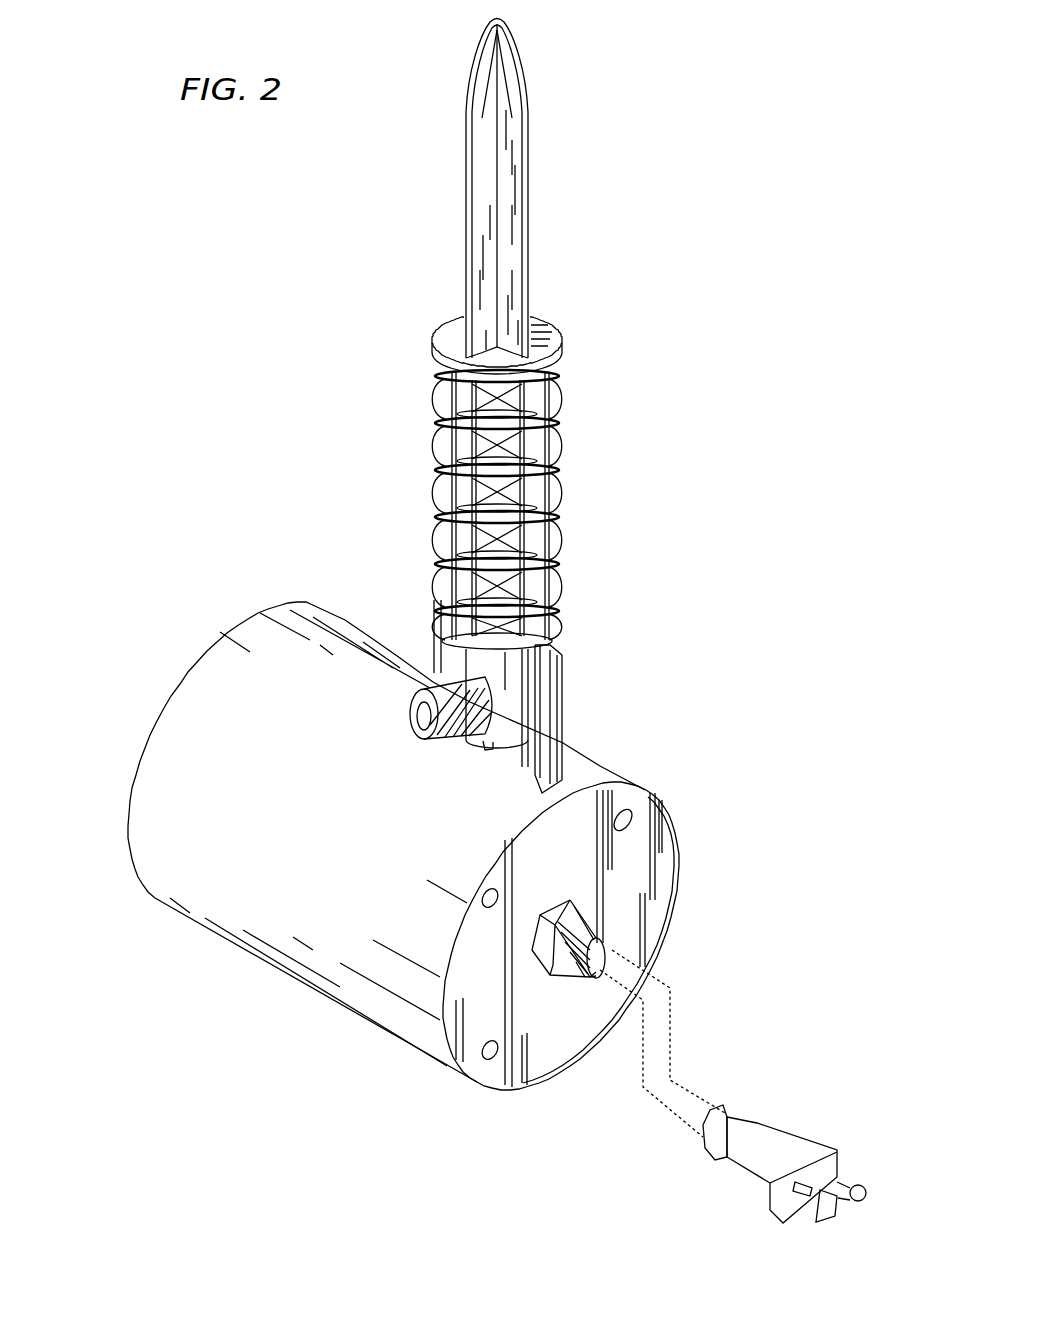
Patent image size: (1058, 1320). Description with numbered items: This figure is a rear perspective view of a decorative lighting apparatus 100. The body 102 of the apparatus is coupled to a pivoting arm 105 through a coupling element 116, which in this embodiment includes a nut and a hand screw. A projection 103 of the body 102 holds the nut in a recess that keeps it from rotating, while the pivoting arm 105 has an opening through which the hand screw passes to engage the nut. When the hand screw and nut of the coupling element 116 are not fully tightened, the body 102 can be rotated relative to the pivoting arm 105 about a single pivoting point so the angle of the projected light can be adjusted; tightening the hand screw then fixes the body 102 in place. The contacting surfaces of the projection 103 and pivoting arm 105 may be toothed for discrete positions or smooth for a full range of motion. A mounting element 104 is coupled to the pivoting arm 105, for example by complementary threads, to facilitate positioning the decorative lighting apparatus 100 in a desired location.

The decorative lighting apparatus 100 is at (766, 66).
The body 102 is at (167, 680).
The projection 103 is at (565, 731).
The mounting element 104 is at (568, 447).
The pivoting arm 105 is at (566, 631).
The coupling element 116 is at (427, 690).